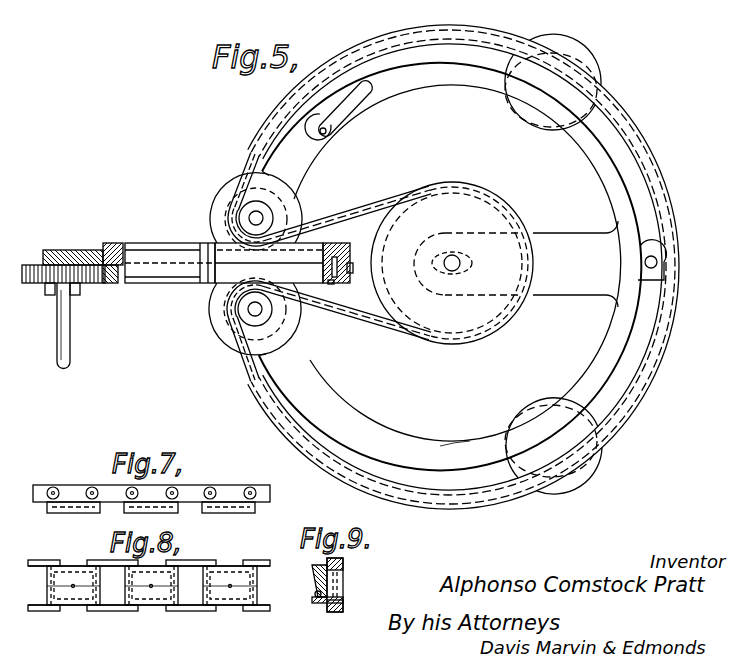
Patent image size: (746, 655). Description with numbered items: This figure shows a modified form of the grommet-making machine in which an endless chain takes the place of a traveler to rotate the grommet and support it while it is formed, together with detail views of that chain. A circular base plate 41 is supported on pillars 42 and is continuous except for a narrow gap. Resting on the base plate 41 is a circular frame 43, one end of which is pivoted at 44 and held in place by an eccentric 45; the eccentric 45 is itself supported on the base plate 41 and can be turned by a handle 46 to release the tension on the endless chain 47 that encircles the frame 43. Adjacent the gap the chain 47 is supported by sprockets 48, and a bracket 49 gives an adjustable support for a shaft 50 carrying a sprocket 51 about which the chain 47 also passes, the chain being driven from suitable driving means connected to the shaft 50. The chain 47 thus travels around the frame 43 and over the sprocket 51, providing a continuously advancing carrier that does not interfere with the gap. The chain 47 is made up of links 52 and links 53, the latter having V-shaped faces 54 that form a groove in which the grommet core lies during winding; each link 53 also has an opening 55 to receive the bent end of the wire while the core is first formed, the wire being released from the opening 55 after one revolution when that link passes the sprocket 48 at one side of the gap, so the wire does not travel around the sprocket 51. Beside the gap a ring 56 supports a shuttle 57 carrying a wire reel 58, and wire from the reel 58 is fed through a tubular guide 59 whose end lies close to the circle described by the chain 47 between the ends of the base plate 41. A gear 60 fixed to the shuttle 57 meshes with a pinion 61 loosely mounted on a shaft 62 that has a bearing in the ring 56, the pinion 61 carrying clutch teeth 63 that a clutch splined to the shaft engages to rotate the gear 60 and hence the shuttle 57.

In FIG. 5, the base plate 41 is at (437, 84).
In FIG. 5, the pillars 42 is at (578, 490).
In FIG. 5, the circular frame 43 is at (468, 477).
In FIG. 5, the pivot 44 is at (644, 262).
In FIG. 5, the eccentric 45 is at (318, 140).
In FIG. 5, the handle 46 is at (358, 100).
In FIG. 5, the endless chain 47 is at (672, 182).
In FIG. 5, the sprockets 48 is at (264, 212).
In FIG. 5, the bracket 49 is at (560, 282).
In FIG. 5, the shaft 50 is at (455, 272).
In FIG. 5, the sprocket 51 is at (422, 305).
In FIG. 7, the links 52 is at (190, 488).
In FIG. 9, the links 52 is at (344, 562).
In FIG. 7, the links 53 is at (230, 488).
In FIG. 8, the links 53 is at (207, 610).
In FIG. 9, the links 53 is at (345, 600).
In FIG. 9, the V-shaped faces 54 is at (317, 590).
In FIG. 8, the opening 55 is at (154, 592).
In FIG. 9, the opening 55 is at (316, 598).
In FIG. 5, the ring 56 is at (84, 250).
In FIG. 5, the shuttle 57 is at (115, 245).
In FIG. 5, the wire reel 58 is at (160, 252).
In FIG. 5, the tubular guide 59 is at (225, 292).
In FIG. 5, the gear 60 is at (110, 285).
In FIG. 5, the pinion 61 is at (90, 284).
In FIG. 5, the shaft 62 is at (60, 333).
In FIG. 5, the clutch teeth 63 is at (50, 297).